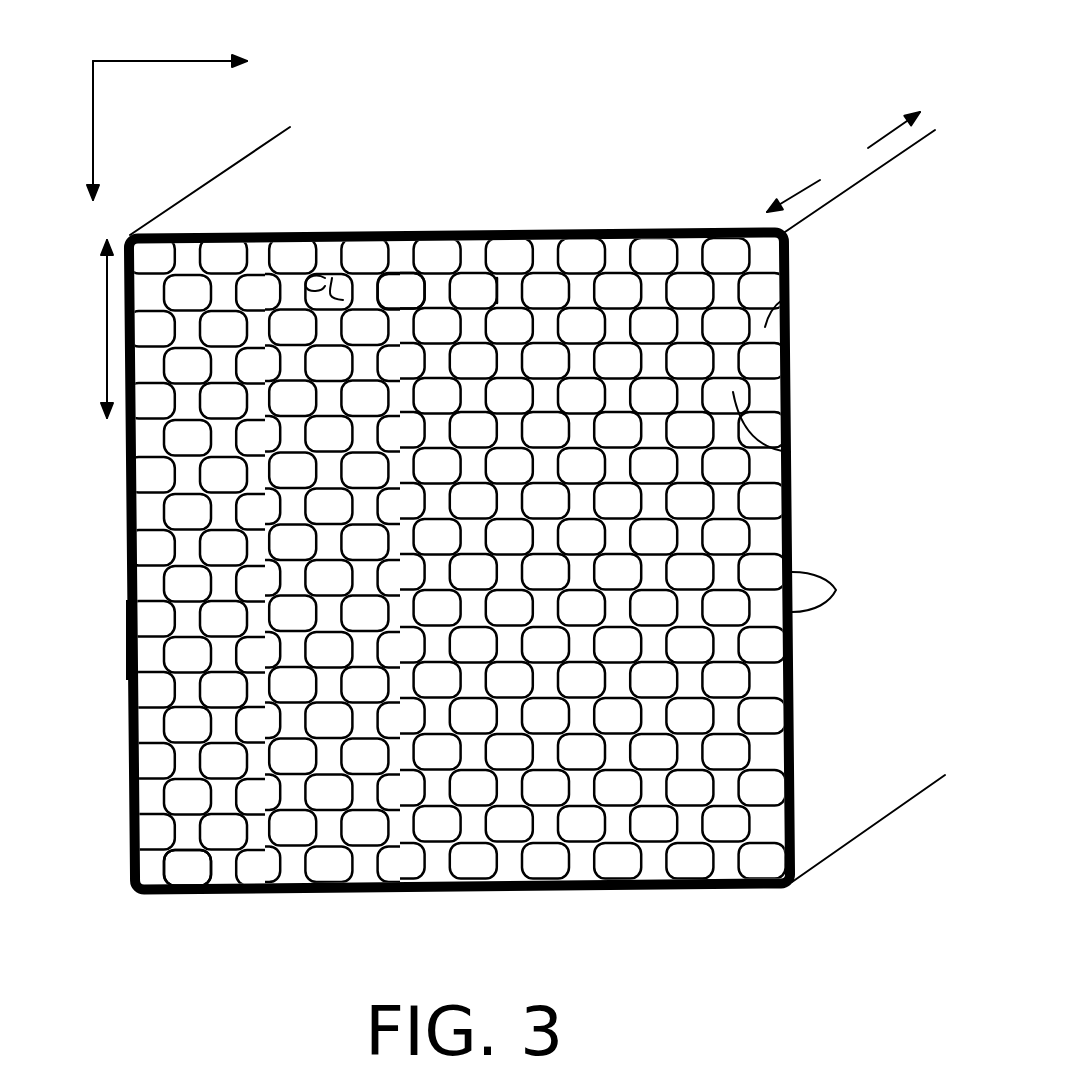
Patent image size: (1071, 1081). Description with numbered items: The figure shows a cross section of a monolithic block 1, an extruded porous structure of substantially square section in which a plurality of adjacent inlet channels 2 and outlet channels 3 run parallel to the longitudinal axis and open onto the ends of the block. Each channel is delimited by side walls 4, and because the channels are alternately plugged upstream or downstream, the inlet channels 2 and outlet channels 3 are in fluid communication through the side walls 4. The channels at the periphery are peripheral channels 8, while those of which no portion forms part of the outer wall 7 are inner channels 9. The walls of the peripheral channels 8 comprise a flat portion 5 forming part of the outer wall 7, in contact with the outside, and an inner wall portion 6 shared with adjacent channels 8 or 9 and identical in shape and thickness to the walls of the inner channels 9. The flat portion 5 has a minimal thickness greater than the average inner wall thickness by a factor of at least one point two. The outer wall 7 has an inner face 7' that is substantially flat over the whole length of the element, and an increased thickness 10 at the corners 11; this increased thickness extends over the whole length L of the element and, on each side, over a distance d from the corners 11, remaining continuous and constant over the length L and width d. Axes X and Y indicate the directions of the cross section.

The monolithic block 1 is at (98, 486).
The inlet channel 2 is at (397, 290).
The outlet channel 3 is at (505, 293).
The side wall 4 is at (332, 278).
The flat portion 5 is at (827, 595).
The inner wall portion 6 is at (788, 360).
The outer wall 7 is at (101, 615).
The inner face of the outer wall 7' is at (129, 847).
The peripheral channel 8 is at (782, 300).
The inner channel 9 is at (790, 452).
The increased thickness 10 is at (797, 748).
The corner 11 is at (792, 882).
The distance from the corners d is at (92, 329).
The length of the element L is at (843, 162).
The X axis X is at (171, 34).
The Y axis Y is at (68, 138).